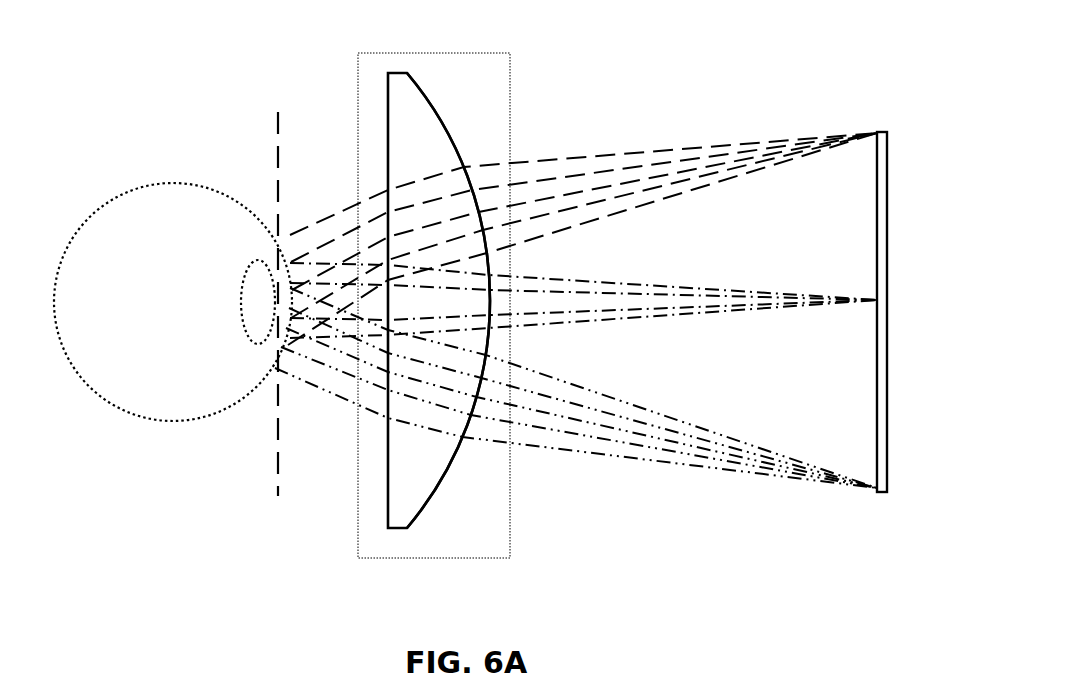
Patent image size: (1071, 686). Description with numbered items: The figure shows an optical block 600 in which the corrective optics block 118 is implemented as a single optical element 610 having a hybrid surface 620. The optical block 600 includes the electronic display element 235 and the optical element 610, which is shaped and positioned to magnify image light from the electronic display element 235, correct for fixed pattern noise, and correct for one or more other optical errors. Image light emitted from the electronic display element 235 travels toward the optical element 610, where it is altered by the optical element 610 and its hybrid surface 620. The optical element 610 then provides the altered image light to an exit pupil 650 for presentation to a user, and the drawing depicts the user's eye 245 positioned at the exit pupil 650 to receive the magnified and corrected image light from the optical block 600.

The optical block 600 is at (41, 78).
The optical element 610 is at (387, 90).
The hybrid surface 620 is at (451, 466).
The corrective optics block 118 is at (359, 536).
The exit pupil 650 is at (251, 334).
The eye 245 is at (120, 409).
The electronic display element 235 is at (872, 499).